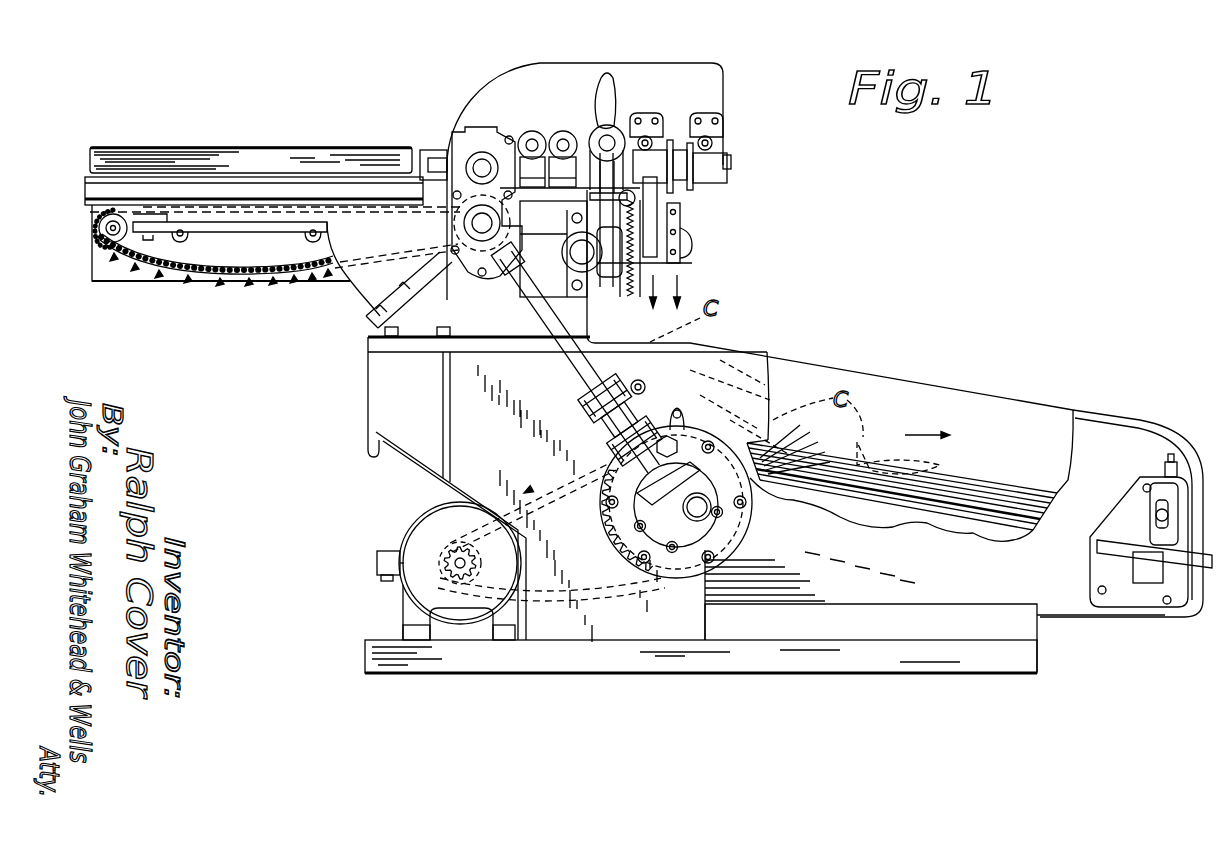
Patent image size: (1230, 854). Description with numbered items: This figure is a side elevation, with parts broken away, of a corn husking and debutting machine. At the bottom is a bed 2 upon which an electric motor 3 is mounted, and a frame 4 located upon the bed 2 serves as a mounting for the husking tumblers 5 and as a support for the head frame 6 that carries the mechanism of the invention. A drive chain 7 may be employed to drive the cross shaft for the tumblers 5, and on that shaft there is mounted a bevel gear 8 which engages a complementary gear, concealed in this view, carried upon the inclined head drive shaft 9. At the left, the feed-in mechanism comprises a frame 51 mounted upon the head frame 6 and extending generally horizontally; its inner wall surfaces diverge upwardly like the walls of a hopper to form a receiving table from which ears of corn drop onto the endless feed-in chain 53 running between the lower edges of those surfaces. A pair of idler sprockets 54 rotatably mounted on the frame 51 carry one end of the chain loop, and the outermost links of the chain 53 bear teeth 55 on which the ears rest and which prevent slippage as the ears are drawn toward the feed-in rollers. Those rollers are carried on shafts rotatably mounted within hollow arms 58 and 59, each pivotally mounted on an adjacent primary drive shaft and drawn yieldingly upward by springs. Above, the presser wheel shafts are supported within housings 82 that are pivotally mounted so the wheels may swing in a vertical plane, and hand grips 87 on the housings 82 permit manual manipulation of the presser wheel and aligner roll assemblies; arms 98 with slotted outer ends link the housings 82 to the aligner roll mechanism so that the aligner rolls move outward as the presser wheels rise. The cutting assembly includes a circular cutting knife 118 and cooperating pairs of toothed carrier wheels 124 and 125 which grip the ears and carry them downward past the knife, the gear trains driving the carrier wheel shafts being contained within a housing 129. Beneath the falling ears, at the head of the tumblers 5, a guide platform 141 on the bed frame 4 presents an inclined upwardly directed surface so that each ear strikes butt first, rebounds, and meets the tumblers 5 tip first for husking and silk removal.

The bed 2 is at (743, 662).
The electric motor 3 is at (450, 603).
The frame 4 is at (422, 123).
The husking tumblers 5 is at (590, 33).
The head frame 6 is at (580, 33).
The drive chain 7 is at (603, 587).
The bevel gear 8 is at (703, 530).
The head drive shaft 9 is at (577, 363).
The frame 51 is at (357, 238).
The endless feed-in chain 53 is at (223, 263).
The idler sprockets 54 is at (130, 243).
The teeth 55 is at (313, 280).
The hollow arm 58 is at (527, 140).
The hollow arm 59 is at (560, 134).
The housing 82 is at (585, 135).
The hand grip 87 is at (618, 80).
The arm 98 is at (610, 200).
The circular cutting knife 118 is at (830, 300).
The carrier wheels 124 is at (637, 265).
The carrier wheels 125 is at (683, 210).
The housing 129 is at (660, 190).
The guide platform 141 is at (727, 400).